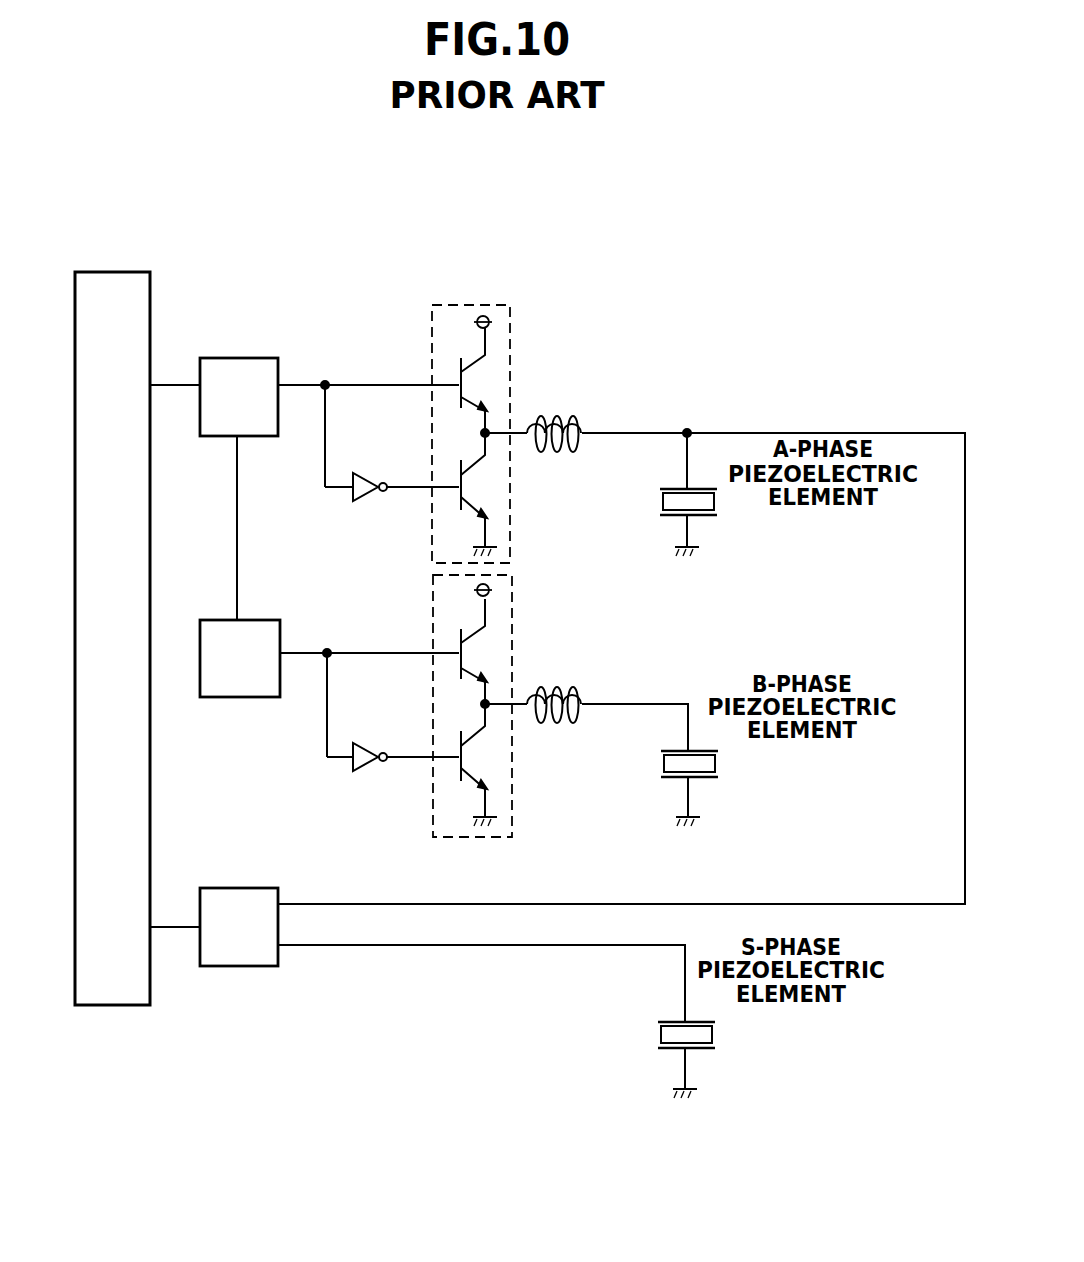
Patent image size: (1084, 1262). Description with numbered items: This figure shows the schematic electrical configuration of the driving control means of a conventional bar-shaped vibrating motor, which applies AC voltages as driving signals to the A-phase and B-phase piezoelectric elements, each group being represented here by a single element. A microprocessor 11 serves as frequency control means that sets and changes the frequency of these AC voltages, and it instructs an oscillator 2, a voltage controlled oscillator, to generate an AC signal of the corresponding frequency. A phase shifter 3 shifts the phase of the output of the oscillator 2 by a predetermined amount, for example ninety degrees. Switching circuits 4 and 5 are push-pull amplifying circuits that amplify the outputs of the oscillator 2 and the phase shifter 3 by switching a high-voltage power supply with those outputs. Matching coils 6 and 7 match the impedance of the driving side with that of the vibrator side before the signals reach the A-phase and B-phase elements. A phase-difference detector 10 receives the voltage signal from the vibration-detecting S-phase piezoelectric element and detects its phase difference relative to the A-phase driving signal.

The microprocessor 11 is at (135, 580).
The oscillator 2 is at (249, 358).
The phase shifter 3 is at (238, 690).
The switching circuit 4 is at (512, 343).
The switching circuit 5 is at (513, 630).
The matching coil 6 is at (562, 413).
The matching coil 7 is at (552, 686).
The phase-difference detector 10 is at (248, 957).